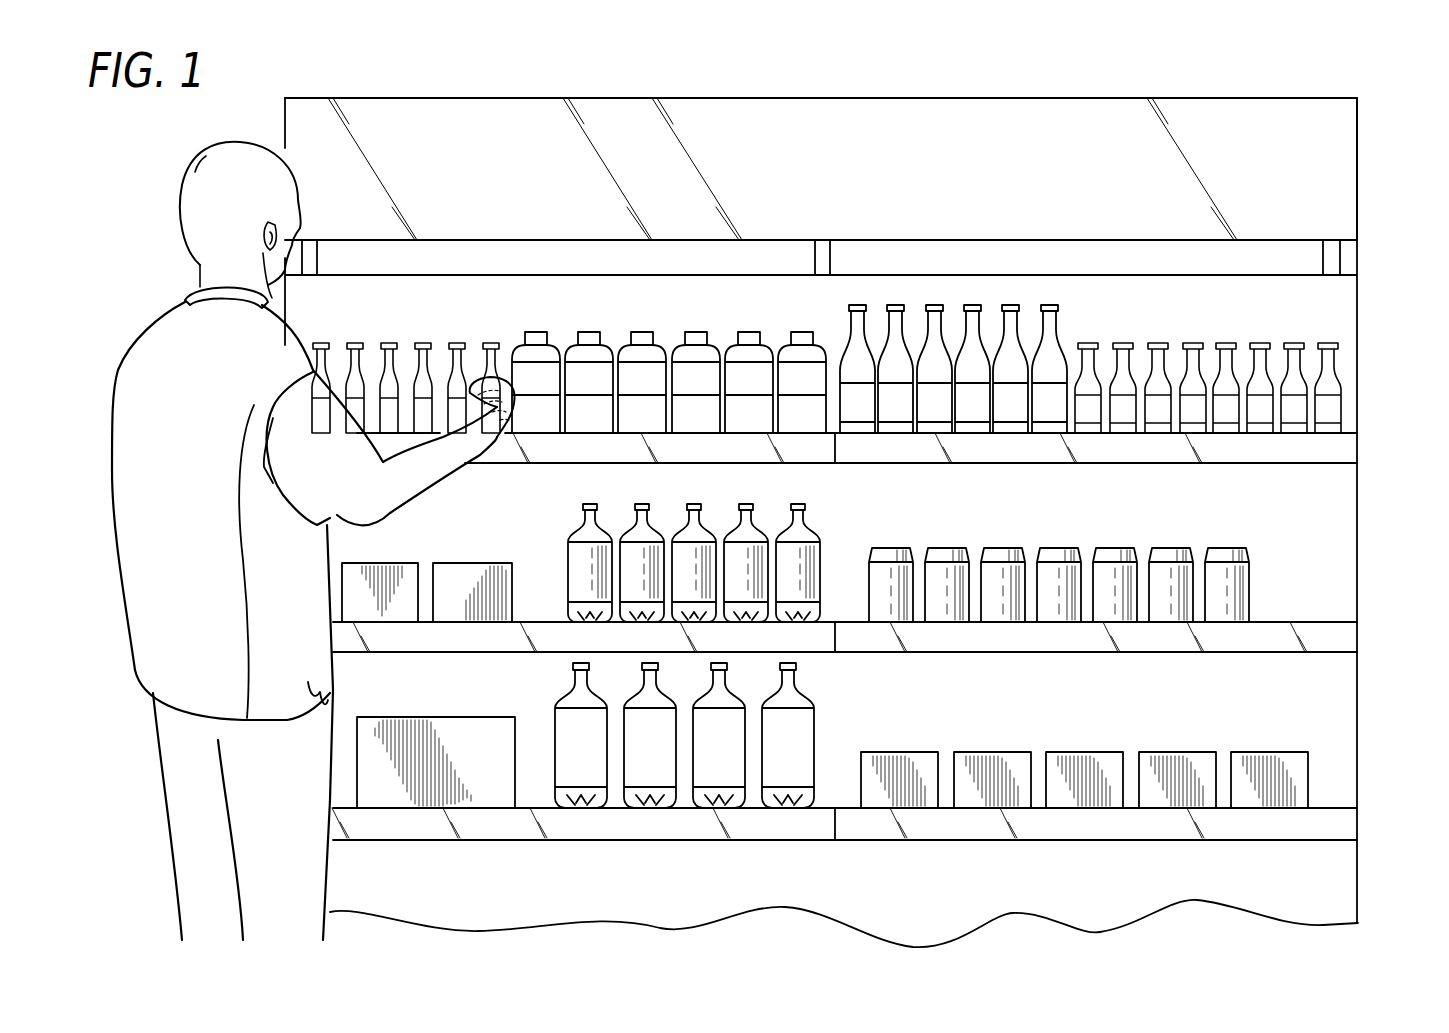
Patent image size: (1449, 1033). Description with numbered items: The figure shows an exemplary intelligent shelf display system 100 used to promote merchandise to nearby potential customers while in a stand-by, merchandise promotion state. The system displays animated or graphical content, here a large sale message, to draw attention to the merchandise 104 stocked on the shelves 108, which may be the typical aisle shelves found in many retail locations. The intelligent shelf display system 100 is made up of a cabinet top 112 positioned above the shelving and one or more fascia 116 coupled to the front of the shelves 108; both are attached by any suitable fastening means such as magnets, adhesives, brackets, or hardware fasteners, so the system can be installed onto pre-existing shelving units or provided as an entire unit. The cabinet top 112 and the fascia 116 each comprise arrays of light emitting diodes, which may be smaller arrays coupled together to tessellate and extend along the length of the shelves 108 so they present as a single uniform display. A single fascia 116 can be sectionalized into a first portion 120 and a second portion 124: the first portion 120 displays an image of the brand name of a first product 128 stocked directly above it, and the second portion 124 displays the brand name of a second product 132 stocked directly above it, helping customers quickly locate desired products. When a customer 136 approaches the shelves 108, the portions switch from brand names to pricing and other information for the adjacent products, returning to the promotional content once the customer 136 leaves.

The intelligent shelf display system 100 is at (1250, 70).
The merchandise 104 is at (1247, 590).
The shelves 108 is at (1318, 307).
The cabinet top 112 is at (478, 127).
The fascia 116 is at (1330, 453).
The first portion 120 is at (1085, 838).
The second portion 124 is at (770, 840).
The first product 128 is at (1307, 780).
The second product 132 is at (468, 793).
The customer 136 is at (152, 337).